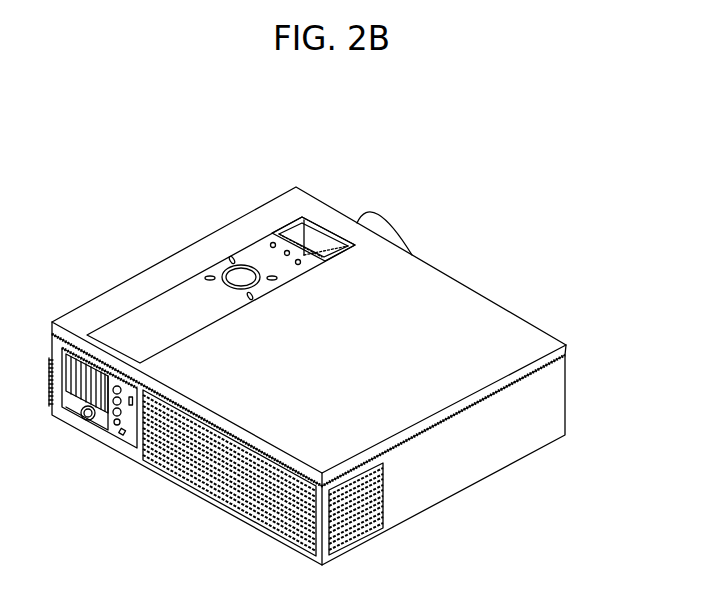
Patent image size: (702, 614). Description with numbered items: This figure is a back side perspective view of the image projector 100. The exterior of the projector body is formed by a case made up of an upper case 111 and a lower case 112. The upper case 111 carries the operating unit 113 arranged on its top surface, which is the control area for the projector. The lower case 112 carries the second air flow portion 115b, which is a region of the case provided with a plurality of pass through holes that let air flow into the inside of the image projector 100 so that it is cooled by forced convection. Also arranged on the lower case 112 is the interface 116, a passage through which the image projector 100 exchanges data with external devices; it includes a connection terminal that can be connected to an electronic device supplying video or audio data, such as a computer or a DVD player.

The image projector 100 is at (340, 371).
The upper case 111 is at (342, 332).
The lower case 112 is at (340, 449).
The operating unit 113 is at (260, 252).
The second air flow portion 115b is at (230, 500).
The interface 116 is at (112, 418).